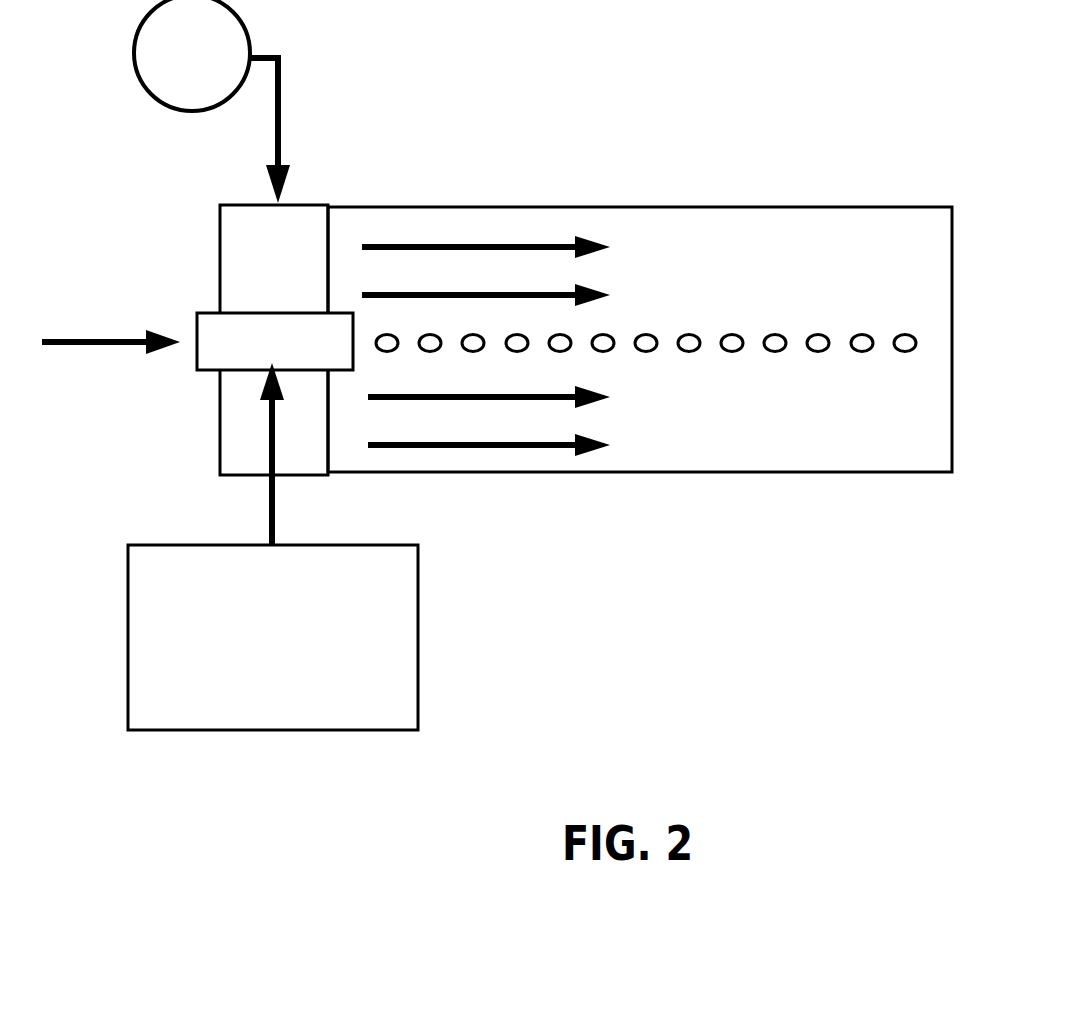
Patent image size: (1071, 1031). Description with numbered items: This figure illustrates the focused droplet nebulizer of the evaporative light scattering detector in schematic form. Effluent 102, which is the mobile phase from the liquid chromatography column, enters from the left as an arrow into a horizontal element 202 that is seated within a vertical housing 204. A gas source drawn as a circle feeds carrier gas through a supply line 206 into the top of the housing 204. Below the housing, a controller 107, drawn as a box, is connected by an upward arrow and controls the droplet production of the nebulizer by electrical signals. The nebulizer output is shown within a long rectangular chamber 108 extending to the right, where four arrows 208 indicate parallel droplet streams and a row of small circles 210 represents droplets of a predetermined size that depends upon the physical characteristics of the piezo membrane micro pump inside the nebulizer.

The effluent 102 is at (118, 337).
The controller 107 is at (383, 618).
The process chamber 108 is at (818, 475).
The electrode 202 is at (224, 333).
The housing 204 is at (228, 425).
The gas supply line 206 is at (283, 95).
The plasma flow 208 is at (552, 442).
The ions 210 is at (735, 358).